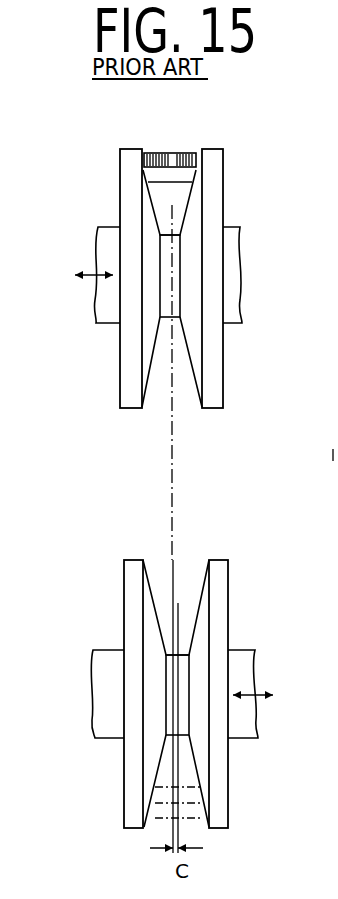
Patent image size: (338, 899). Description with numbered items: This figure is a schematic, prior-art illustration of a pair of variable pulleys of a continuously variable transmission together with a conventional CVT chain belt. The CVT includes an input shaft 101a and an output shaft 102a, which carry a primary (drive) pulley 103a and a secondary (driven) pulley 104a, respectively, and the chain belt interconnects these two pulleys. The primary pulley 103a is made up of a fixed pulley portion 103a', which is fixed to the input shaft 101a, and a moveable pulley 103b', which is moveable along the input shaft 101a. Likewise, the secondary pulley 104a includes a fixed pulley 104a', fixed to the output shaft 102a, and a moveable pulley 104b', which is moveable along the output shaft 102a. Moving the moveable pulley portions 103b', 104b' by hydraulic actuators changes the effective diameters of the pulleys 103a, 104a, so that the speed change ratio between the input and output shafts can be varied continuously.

The input shaft 101a is at (110, 235).
The output shaft 102a is at (107, 662).
The primary pulley 103a is at (178, 266).
The fixed pulley portion 103a' is at (254, 286).
The moveable pulley 103b' is at (96, 289).
The secondary pulley 104a is at (191, 682).
The fixed pulley 104a' is at (101, 706).
The moveable pulley 104b' is at (265, 696).